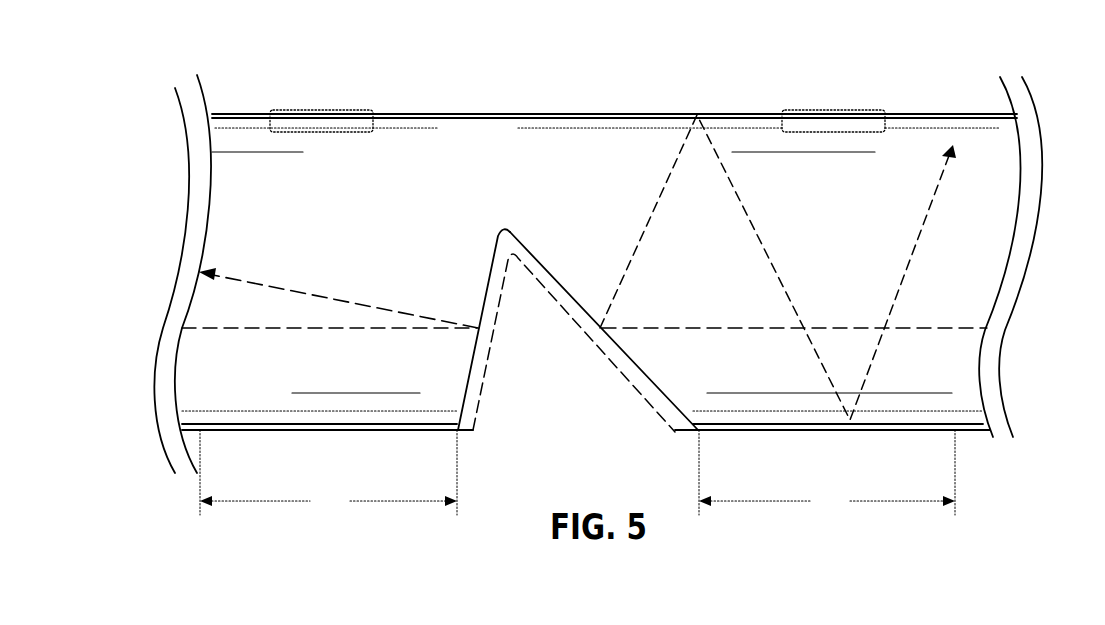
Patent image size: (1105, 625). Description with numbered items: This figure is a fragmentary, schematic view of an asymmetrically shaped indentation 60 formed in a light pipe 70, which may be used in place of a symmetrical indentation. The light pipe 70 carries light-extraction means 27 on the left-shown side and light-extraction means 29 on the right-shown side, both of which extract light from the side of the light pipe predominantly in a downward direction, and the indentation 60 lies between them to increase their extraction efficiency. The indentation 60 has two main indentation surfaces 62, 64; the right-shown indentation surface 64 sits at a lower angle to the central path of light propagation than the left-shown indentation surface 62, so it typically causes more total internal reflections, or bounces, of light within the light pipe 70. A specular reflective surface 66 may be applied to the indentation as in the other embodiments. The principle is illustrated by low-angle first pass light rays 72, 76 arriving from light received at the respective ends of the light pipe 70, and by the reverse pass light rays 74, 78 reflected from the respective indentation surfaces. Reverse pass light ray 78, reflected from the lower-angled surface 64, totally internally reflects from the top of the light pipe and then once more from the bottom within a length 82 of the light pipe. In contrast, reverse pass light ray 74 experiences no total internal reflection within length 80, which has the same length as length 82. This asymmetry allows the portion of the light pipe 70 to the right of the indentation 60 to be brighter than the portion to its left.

The light-extraction means 27 is at (323, 110).
The light-extraction means 29 is at (835, 110).
The indentation 60 is at (586, 327).
The indentation surface 62 is at (490, 260).
The indentation surface 64 is at (526, 250).
The specular reflective surface 66 is at (484, 372).
The light pipe 70 is at (265, 397).
The first pass light ray 72 is at (212, 340).
The reverse pass light ray 74 is at (286, 288).
The first pass light ray 76 is at (960, 332).
The reverse pass light ray 78 is at (933, 203).
The length 80 is at (328, 474).
The length 82 is at (827, 475).